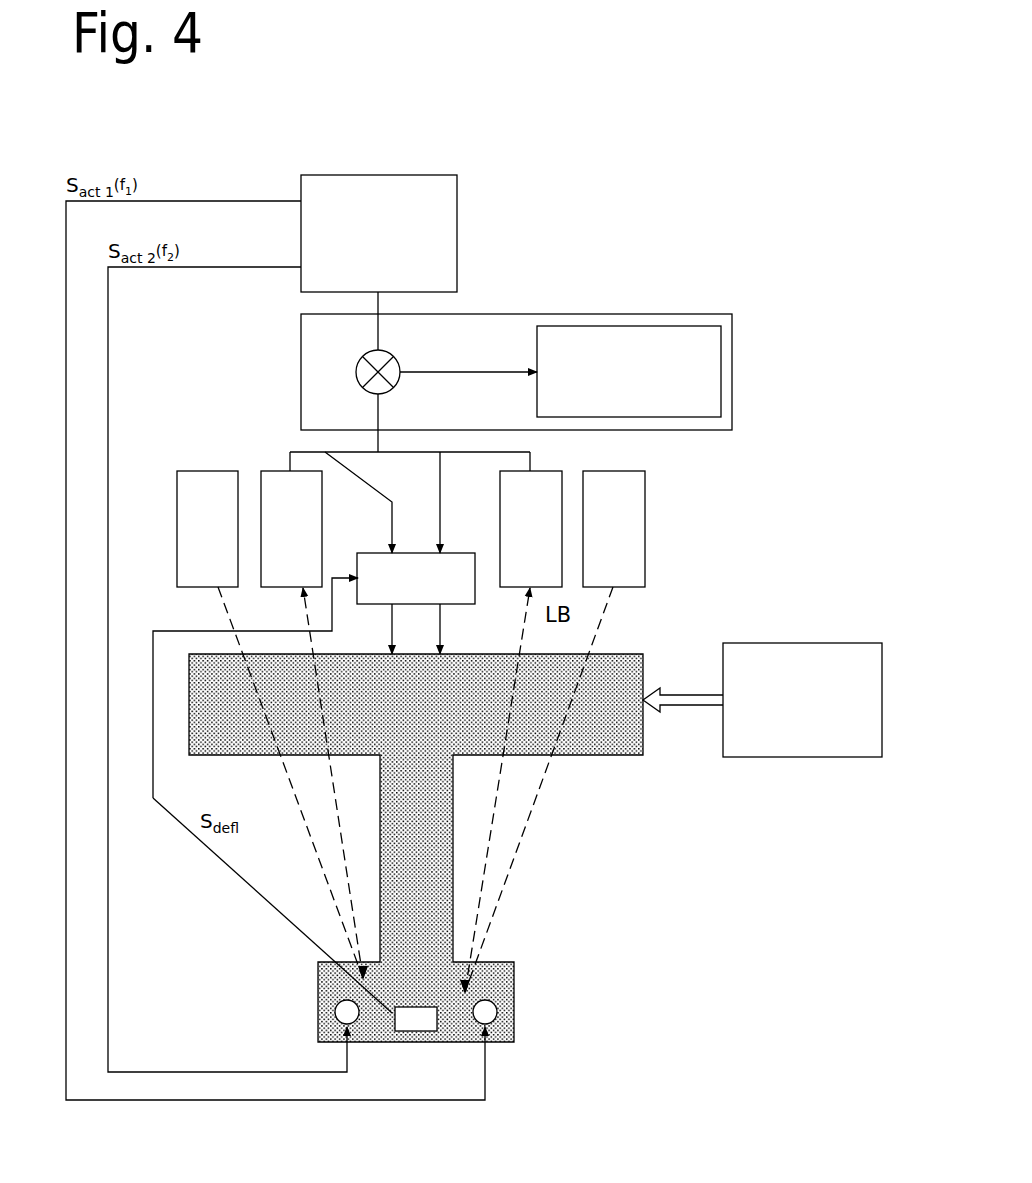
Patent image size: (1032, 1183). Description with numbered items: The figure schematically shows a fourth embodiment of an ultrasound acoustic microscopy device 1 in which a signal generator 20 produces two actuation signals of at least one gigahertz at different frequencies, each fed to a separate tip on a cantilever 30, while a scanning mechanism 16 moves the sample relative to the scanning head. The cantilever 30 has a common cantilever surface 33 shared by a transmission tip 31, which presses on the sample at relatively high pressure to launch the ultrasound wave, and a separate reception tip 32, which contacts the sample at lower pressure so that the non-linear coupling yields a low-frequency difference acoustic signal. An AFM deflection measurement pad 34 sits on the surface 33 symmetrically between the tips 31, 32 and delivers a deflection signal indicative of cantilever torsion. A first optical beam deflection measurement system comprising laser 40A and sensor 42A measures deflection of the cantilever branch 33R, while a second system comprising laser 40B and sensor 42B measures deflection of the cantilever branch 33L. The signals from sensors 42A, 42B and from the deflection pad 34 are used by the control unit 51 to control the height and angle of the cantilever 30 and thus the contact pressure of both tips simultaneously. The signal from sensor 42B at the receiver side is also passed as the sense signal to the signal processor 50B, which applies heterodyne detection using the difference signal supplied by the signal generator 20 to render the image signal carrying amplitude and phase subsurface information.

The ultrasound acoustic microscopy device 1 is at (668, 815).
The scanning mechanism 16 is at (789, 741).
The signal generator 20 is at (367, 274).
The cantilever 30 is at (404, 712).
The transmission tip 31 is at (340, 1006).
The reception tip 32 is at (490, 1016).
The common cantilever surface 33 is at (420, 820).
The cantilever branch 33R is at (316, 993).
The cantilever branch 33L is at (516, 1003).
The AFM deflection measurement pad 34 is at (415, 1018).
The laser 40A is at (271, 542).
The laser 40B is at (511, 542).
The sensor 42A is at (187, 542).
The sensor 42B is at (594, 542).
The signal processor 50B is at (345, 347).
The control unit 51 is at (403, 591).